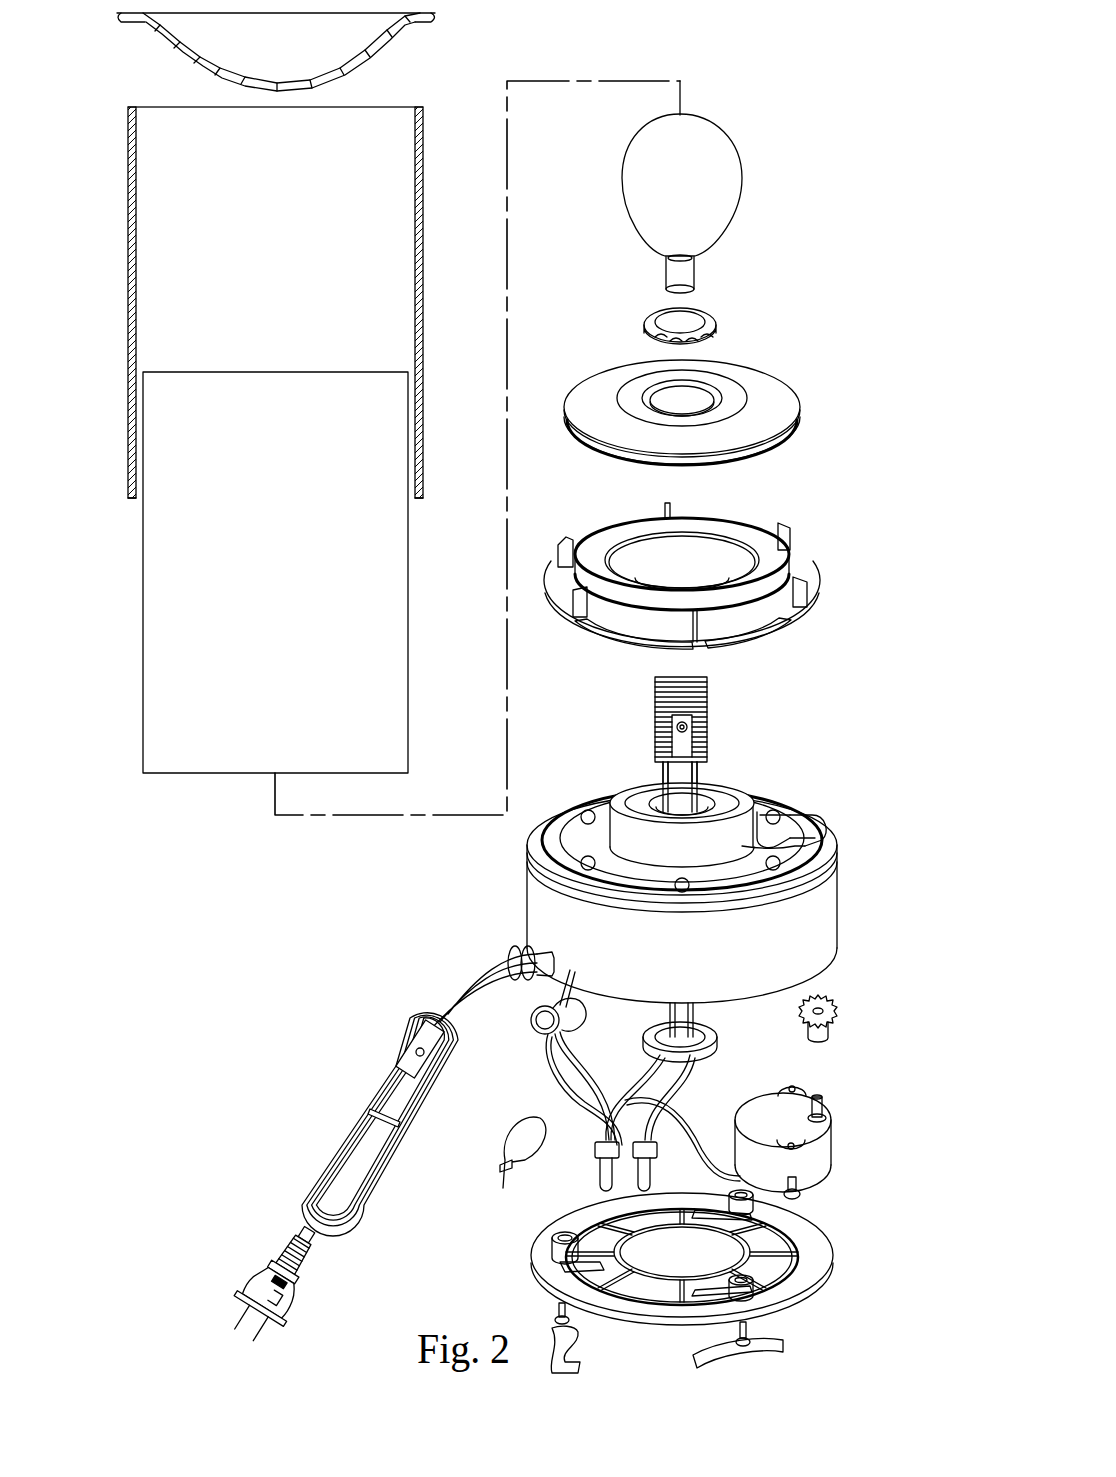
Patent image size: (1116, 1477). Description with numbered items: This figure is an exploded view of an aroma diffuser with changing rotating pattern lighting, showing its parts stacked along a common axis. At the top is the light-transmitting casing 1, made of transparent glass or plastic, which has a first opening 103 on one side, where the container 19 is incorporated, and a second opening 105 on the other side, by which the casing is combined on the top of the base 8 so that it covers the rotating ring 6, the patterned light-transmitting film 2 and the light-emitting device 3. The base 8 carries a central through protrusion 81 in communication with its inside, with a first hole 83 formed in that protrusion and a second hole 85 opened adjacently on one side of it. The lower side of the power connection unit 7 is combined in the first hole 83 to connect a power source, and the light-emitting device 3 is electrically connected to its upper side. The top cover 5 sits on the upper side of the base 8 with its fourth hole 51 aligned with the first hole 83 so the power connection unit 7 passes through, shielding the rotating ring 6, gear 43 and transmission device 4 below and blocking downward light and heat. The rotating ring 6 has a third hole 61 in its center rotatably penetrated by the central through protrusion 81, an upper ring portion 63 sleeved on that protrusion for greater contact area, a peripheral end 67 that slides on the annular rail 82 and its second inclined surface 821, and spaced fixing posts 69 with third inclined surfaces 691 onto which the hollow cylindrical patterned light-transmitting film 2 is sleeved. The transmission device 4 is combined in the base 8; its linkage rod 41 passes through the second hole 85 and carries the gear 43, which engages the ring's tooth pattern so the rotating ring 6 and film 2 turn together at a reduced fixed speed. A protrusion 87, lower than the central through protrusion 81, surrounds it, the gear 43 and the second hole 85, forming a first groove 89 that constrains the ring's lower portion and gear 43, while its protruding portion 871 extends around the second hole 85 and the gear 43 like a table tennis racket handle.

The light-transmitting casing 1 is at (129, 253).
The first opening 103 is at (157, 116).
The second opening 105 is at (135, 505).
The container 19 is at (388, 35).
The patterned light-transmitting film 2 is at (147, 682).
The light-emitting device 3 is at (723, 160).
The top cover 5 is at (689, 363).
The fourth hole 51 is at (707, 382).
The rotating ring 6 is at (727, 543).
The third hole 61 is at (685, 572).
The upper ring portion 63 is at (622, 542).
The peripheral end 67 is at (797, 632).
The fixing posts 69 is at (795, 550).
The third inclined surface 691 is at (785, 528).
The power connection unit 7 is at (699, 703).
The base 8 is at (657, 834).
The central through protrusion 81 is at (722, 792).
The annular rail 82 is at (545, 855).
The second inclined surface 821 is at (815, 845).
The first hole 83 is at (654, 792).
The second hole 85 is at (789, 817).
The protrusion 87 is at (737, 872).
The protruding portion 871 is at (793, 852).
The first groove 89 is at (601, 818).
The transmission device 4 is at (841, 1097).
The linkage rod 41 is at (819, 1138).
The gear 43 is at (827, 1037).